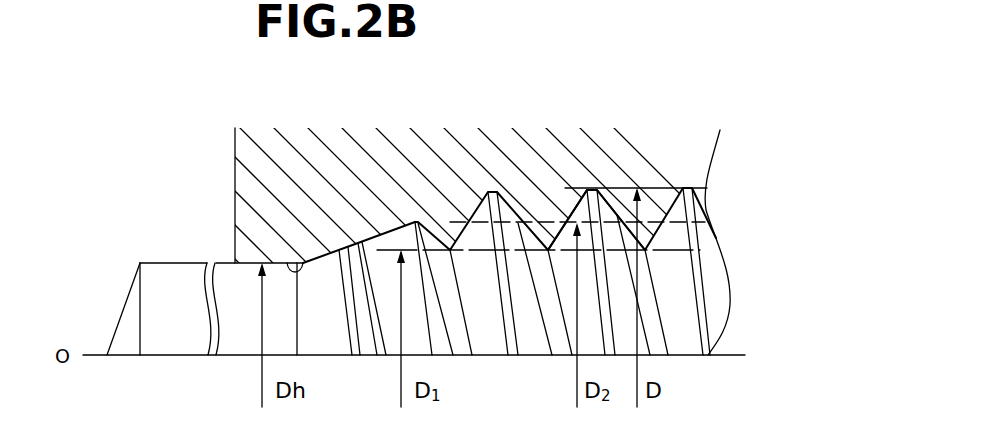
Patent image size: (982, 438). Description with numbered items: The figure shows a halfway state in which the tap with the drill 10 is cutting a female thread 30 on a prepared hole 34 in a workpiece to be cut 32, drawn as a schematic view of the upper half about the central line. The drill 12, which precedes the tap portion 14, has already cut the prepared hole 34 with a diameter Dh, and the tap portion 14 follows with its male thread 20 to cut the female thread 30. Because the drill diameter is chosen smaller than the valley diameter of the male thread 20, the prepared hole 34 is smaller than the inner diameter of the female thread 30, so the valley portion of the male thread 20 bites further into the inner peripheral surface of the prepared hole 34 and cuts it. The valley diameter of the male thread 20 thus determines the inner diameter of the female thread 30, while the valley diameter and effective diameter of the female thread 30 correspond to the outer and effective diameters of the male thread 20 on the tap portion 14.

The tap with the drill 10 is at (203, 236).
The drill 12 is at (175, 282).
The tap portion 14 is at (636, 154).
The male thread 20 is at (575, 188).
The female thread 30 is at (675, 272).
The workpiece to be cut 32 is at (423, 163).
The prepared hole 34 is at (298, 272).